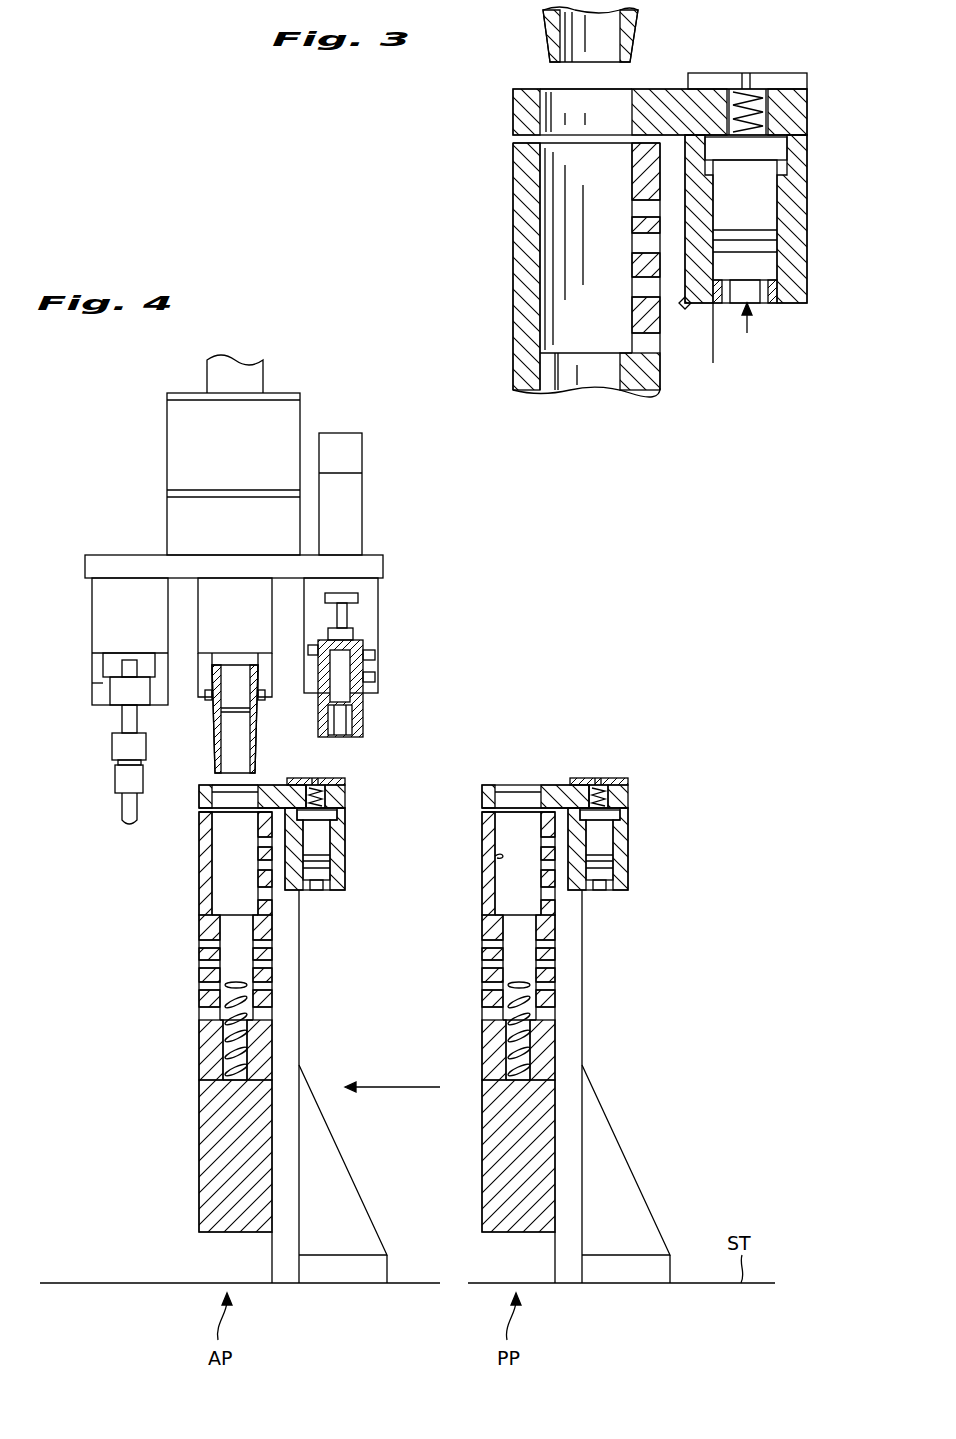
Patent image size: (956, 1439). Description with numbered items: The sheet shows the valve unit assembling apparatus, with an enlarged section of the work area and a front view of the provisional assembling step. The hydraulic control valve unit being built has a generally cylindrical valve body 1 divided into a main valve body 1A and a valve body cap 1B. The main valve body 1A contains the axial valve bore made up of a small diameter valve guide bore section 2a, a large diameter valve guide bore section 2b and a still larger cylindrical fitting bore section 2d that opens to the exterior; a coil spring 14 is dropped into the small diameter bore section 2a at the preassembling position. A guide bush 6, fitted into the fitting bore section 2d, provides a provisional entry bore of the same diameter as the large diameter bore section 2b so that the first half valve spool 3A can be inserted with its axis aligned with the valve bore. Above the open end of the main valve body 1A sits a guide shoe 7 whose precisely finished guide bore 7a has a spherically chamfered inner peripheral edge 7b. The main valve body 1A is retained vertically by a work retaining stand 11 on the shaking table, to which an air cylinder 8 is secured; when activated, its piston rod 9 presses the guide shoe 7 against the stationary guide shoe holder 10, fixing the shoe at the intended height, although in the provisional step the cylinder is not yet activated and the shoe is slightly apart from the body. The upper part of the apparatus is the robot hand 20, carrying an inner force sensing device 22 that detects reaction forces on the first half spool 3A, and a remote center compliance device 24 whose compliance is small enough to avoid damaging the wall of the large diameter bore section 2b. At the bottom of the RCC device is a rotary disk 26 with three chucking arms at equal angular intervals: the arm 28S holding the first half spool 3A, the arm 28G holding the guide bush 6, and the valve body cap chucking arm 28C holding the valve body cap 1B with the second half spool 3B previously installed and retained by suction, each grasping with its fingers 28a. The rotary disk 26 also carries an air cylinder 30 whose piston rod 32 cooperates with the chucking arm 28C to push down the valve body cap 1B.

In FIG. 4, the valve body 1 is at (198, 1138).
In FIG. 3, the main valve body 1A is at (513, 320).
In FIG. 4, the valve body cap 1B is at (375, 680).
In FIG. 4, the small diameter cylindrical valve guide bore section 2a is at (226, 1050).
In FIG. 4, the large diameter cylindrical valve guide bore section 2b is at (225, 931).
In FIG. 3, the cylindrical fitting bore section 2d is at (547, 237).
In FIG. 4, the cylindrical fitting bore section 2d is at (214, 858).
In FIG. 4, the first half valve spool 3A is at (115, 779).
In FIG. 4, the second half valve spool 3B is at (345, 720).
In FIG. 3, the guide bush 6 is at (543, 27).
In FIG. 4, the guide bush 6 is at (212, 725).
In FIG. 3, the guide shoe 7 is at (513, 100).
In FIG. 4, the guide shoe 7 is at (199, 792).
In FIG. 3, the guide bore 7a is at (540, 118).
In FIG. 3, the inner peripheral edge 7b is at (622, 89).
In FIG. 4, the inner peripheral edge 7b is at (258, 785).
In FIG. 3, the air cylinder 8 is at (805, 230).
In FIG. 4, the air cylinder 8 is at (347, 843).
In FIG. 3, the piston rod 9 is at (770, 197).
In FIG. 4, the piston rod 9 is at (328, 833).
In FIG. 3, the stationary guide shoe holder 10 is at (807, 80).
In FIG. 4, the stationary guide shoe holder 10 is at (345, 782).
In FIG. 3, the work retaining stand 11 is at (713, 357).
In FIG. 4, the work retaining stand 11 is at (285, 997).
In FIG. 4, the coil spring 14 is at (224, 1001).
In FIG. 4, the robot hand 20 is at (273, 378).
In FIG. 4, the inner force sensing device 22 is at (167, 408).
In FIG. 4, the remote center compliance device 24 is at (167, 517).
In FIG. 4, the rotary disk 26 is at (383, 562).
In FIG. 4, the chucking arm 28S is at (150, 623).
In FIG. 4, the chucking arm 28G is at (258, 623).
In FIG. 4, the valve body cap chucking arm 28C is at (378, 607).
In FIG. 4, the fingers 28a is at (92, 683).
In FIG. 4, the air cylinder 30 is at (352, 503).
In FIG. 4, the piston rod 32 is at (348, 620).